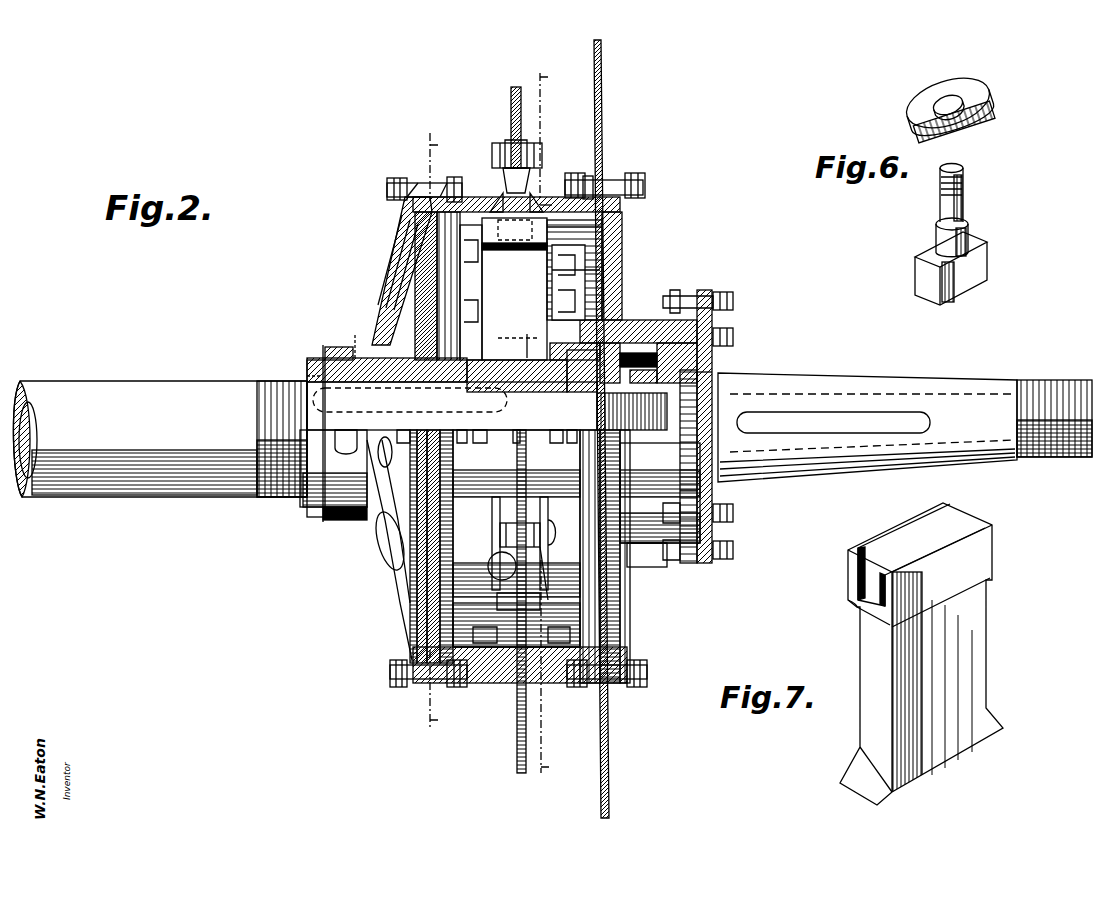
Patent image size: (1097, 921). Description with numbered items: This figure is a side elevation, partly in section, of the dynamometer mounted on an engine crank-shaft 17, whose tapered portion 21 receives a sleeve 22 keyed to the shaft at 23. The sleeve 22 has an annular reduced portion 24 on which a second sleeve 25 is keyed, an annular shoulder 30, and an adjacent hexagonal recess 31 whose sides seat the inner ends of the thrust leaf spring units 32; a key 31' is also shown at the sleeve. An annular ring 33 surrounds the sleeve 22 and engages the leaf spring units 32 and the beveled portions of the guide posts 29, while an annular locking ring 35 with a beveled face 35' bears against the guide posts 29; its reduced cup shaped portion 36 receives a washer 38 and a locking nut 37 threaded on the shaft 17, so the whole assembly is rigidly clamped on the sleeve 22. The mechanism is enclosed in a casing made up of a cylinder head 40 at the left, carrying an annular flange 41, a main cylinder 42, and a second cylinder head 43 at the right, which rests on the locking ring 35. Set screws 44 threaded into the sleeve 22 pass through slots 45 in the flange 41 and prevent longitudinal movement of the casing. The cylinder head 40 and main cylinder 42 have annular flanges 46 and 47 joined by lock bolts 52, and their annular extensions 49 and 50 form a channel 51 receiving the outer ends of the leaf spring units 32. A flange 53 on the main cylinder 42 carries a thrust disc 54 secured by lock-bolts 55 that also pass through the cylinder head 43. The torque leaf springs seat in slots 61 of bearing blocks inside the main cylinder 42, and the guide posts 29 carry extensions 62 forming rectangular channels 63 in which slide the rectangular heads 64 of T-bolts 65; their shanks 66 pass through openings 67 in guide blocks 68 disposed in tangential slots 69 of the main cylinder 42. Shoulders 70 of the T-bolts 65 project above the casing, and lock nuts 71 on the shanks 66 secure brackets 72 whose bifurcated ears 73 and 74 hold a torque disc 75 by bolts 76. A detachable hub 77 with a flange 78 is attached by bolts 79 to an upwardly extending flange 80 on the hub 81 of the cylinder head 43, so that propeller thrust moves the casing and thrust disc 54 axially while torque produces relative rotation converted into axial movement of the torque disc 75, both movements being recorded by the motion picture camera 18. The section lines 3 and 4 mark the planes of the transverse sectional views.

In FIG. 2, the crank-shaft 17 is at (148, 384).
In FIG. 2, the sleeve 22 is at (308, 360).
In FIG. 2, the key 23 is at (305, 368).
In FIG. 2, the annular flange 41 is at (330, 350).
In FIG. 2, the set screws 44 is at (358, 334).
In FIG. 2, the annular reduced portion 24 is at (452, 406).
In FIG. 2, the recess 31 is at (410, 404).
In FIG. 2, the tapered portion 21 is at (472, 428).
In FIG. 2, the locking nut 37 is at (600, 404).
In FIG. 2, the cup shaped portion 36 is at (647, 330).
In FIG. 2, the washer 38 is at (700, 373).
In FIG. 2, the motion picture camera 18 is at (406, 205).
In FIG. 2, the channel 51 is at (402, 218).
In FIG. 2, the annular extension 49 is at (405, 230).
In FIG. 2, the annular extension 50 is at (410, 242).
In FIG. 2, the leaf spring units 32 is at (414, 298).
In FIG. 2, the annular shoulder 30 is at (429, 286).
In FIG. 2, the annular ring 33 is at (472, 292).
In FIG. 2, the guide posts 29 is at (514, 289).
In FIG. 7, the guide posts 29 is at (978, 637).
In FIG. 2, the key 31' is at (502, 327).
In FIG. 2, the second sleeve 25 is at (519, 337).
In FIG. 2, the annular locking ring 35 is at (575, 271).
In FIG. 2, the beveled face 35' is at (568, 320).
In FIG. 2, the second cylinder head 43 is at (622, 239).
In FIG. 2, the main cylinder 42 is at (493, 207).
In FIG. 2, the torque disc 75 is at (511, 103).
In FIG. 2, the bifurcated ear 73 is at (508, 140).
In FIG. 2, the bolts 76 is at (492, 155).
In FIG. 2, the lock nuts 71 is at (528, 192).
In FIG. 2, the brackets 72 is at (541, 194).
In FIG. 2, the guide blocks 68 is at (491, 193).
In FIG. 6, the guide blocks 68 is at (977, 91).
In FIG. 2, the openings 67 is at (554, 194).
In FIG. 6, the openings 67 is at (945, 100).
In FIG. 2, the thrust disc 54 is at (601, 121).
In FIG. 2, the lock-bolts 55 is at (613, 180).
In FIG. 2, the flange 53 is at (582, 176).
In FIG. 2, the lock bolts 52 is at (387, 190).
In FIG. 2, the annular flange 46 is at (423, 185).
In FIG. 2, the annular flange 47 is at (443, 185).
In FIG. 2, the section line 3 is at (553, 425).
In FIG. 2, the section line 4 is at (440, 431).
In FIG. 2, the flange 78 is at (722, 291).
In FIG. 2, the bolts 79 is at (715, 292).
In FIG. 2, the upwardly extending flange 80 is at (683, 292).
In FIG. 2, the detachable hub 77 is at (718, 499).
In FIG. 2, the slots 45 is at (343, 452).
In FIG. 2, the cylinder head 40 is at (400, 597).
In FIG. 2, the slots 61 is at (660, 505).
In FIG. 2, the hub 81 is at (647, 499).
In FIG. 2, the bifurcated ear 74 is at (498, 522).
In FIG. 2, the tangential slots 69 is at (551, 521).
In FIG. 6, the shanks 66 is at (965, 208).
In FIG. 6, the shoulders 70 is at (937, 225).
In FIG. 6, the T-bolts 65 is at (970, 236).
In FIG. 6, the rectangular heads 64 is at (931, 292).
In FIG. 7, the extensions 62 is at (960, 506).
In FIG. 7, the rectangular channels 63 is at (852, 605).